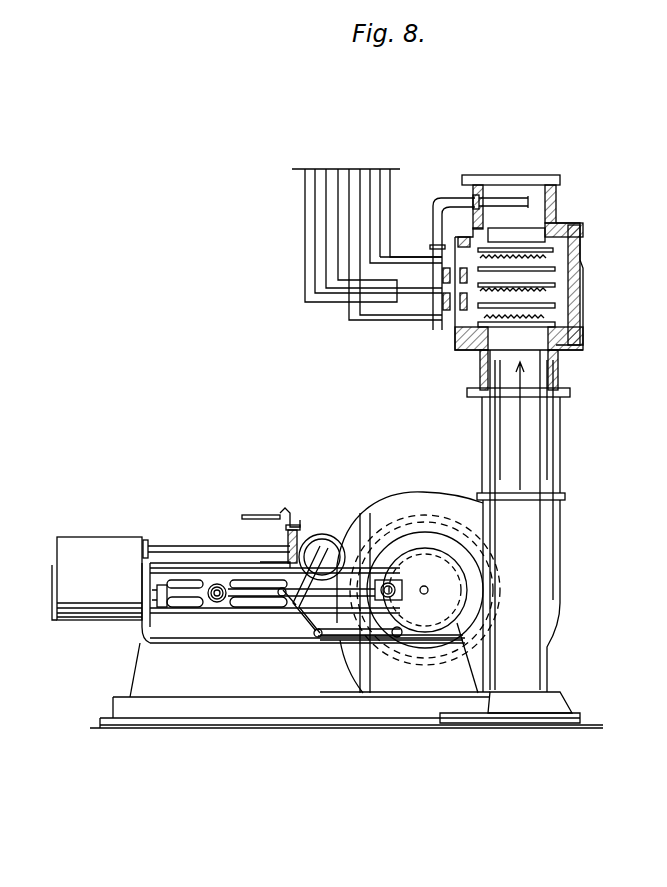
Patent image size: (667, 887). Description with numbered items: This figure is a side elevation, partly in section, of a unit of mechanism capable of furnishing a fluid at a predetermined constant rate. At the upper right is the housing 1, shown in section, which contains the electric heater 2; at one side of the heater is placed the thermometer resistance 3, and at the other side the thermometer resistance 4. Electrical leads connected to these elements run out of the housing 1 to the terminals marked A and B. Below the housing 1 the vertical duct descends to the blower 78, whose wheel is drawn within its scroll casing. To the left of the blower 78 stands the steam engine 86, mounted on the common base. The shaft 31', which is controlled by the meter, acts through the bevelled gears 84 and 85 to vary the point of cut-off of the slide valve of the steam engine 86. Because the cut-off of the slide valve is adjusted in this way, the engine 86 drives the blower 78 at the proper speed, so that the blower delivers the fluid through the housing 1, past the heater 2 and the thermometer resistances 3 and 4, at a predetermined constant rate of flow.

The housing 1 is at (558, 213).
The electric heater 2 is at (547, 288).
The thermometer resistance 3 is at (547, 313).
The thermometer resistance 4 is at (547, 248).
The blower 78 is at (473, 592).
The steam engine 86 is at (125, 545).
The shaft 31' is at (261, 504).
The bevelled gear 84 is at (288, 514).
The bevelled gear 85 is at (300, 525).
The terminal A is at (300, 169).
The terminal B is at (392, 169).